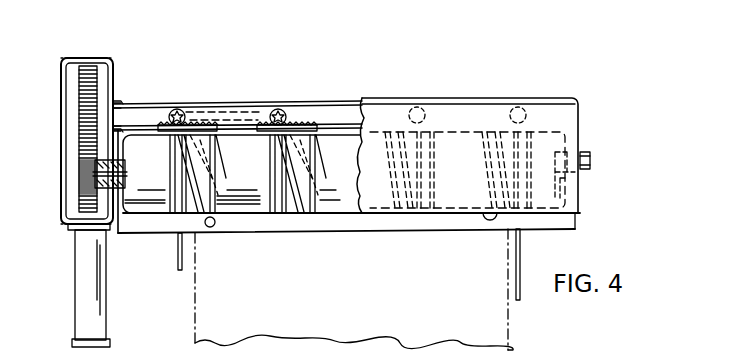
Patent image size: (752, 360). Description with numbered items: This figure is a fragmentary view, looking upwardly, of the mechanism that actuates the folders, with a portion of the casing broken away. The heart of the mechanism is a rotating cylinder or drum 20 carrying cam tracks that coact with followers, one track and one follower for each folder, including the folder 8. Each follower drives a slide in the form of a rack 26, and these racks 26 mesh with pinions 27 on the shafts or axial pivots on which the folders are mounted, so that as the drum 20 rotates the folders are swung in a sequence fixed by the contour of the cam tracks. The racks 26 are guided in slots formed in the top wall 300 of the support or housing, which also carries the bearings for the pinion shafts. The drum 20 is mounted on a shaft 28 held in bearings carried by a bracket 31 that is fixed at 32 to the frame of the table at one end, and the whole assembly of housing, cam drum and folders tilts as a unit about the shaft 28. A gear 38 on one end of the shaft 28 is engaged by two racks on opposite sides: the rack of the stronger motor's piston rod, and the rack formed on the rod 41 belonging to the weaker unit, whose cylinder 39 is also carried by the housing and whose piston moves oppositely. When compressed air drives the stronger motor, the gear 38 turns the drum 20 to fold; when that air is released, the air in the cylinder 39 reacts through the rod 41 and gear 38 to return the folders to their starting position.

The folder 8 is at (236, 111).
The rotating cylinder or drum 20 is at (316, 150).
The rack 26 is at (163, 124).
The pinion 27 is at (182, 111).
The shaft 28 is at (118, 158).
The bracket 31 is at (127, 227).
The fixing point 32 is at (210, 227).
The gear 38 is at (82, 183).
The cylinder of the weaker unit 39 is at (80, 277).
The piston rod 41 is at (82, 121).
The top wall 300 is at (356, 110).